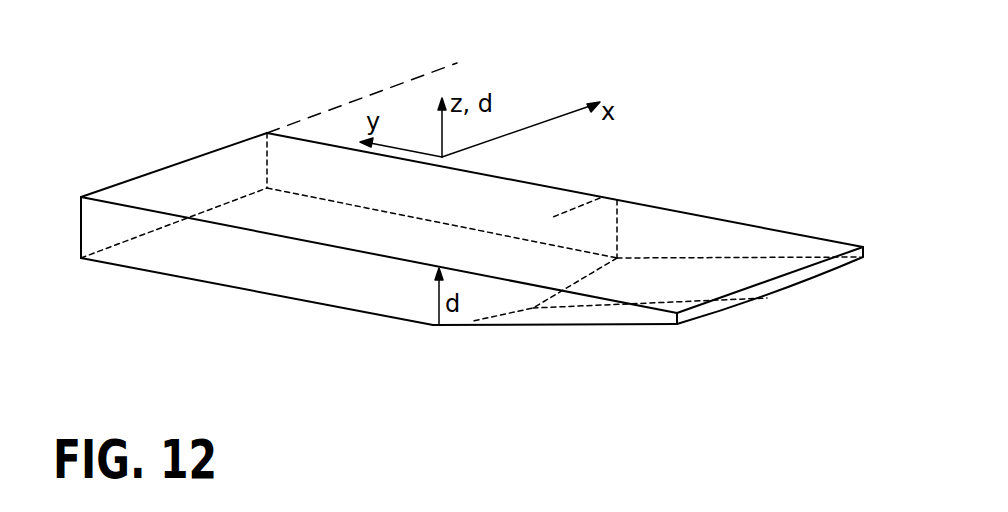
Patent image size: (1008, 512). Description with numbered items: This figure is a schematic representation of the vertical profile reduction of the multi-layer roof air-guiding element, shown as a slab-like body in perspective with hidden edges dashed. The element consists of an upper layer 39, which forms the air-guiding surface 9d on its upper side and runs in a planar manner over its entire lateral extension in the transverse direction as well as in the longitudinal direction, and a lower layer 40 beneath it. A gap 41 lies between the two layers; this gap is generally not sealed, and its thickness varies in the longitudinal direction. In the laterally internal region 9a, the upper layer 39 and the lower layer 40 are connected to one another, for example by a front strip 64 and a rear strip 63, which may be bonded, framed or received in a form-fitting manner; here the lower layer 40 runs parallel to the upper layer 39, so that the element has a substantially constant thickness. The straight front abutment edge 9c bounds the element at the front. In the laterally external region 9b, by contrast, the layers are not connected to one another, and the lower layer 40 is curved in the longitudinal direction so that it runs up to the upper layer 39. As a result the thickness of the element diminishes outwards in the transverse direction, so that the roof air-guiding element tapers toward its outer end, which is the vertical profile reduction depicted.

The upper layer 39 is at (157, 193).
The internal region 9a is at (210, 177).
The air-guiding surface 9d is at (248, 172).
The front abutment edge 9c is at (572, 190).
The front strip 64 is at (600, 198).
The rear strip 63 is at (177, 253).
The lower layer 40 is at (243, 267).
The gap 41 is at (533, 310).
The external region 9b is at (565, 310).